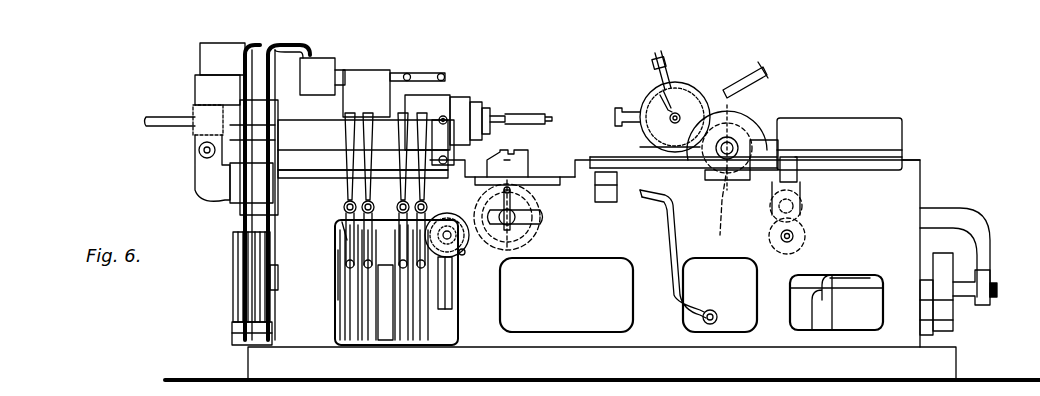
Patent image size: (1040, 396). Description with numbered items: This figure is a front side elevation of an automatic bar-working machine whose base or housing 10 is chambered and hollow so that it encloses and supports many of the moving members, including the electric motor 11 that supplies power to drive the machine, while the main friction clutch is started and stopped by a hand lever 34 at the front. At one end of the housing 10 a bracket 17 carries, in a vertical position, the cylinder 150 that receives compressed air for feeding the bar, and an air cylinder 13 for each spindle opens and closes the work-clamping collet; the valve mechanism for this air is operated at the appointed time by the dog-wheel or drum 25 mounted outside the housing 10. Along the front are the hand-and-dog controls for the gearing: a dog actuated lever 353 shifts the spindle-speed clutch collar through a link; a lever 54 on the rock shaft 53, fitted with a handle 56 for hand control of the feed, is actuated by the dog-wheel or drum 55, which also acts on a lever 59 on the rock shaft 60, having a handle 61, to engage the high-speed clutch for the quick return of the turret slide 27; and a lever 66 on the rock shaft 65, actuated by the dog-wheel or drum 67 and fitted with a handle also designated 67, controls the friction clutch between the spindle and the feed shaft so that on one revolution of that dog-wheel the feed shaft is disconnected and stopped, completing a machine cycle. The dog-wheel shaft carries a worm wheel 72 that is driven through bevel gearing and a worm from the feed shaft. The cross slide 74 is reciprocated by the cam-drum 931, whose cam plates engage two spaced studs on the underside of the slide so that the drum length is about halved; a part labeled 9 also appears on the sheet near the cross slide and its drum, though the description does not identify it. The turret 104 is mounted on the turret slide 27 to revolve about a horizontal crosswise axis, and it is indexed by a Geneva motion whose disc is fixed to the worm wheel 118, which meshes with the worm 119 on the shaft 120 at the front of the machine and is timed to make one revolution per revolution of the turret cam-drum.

The work support 9 is at (512, 152).
The base or housing 10 is at (926, 187).
The electric motor 11 is at (655, 52).
The air cylinder 13 is at (330, 64).
The bracket 17 is at (205, 92).
The dog-wheel or drum 25 is at (236, 291).
The turret slide 27 is at (839, 144).
The hand lever 34 is at (675, 277).
The rock shaft 53 is at (345, 222).
The lever 54 is at (340, 247).
The dog-wheel or drum 55 is at (350, 318).
The handle 56 is at (363, 149).
The lever 59 is at (350, 181).
The rock shaft 60 is at (344, 206).
The handle 61 is at (345, 127).
The rock shaft 65 is at (425, 205).
The lever 66 is at (440, 216).
The dog-wheel or drum 67 is at (420, 118).
The worm wheel 72 is at (452, 310).
The cross slide 74 is at (532, 152).
The turret 104 is at (646, 100).
The worm wheel 118 is at (745, 125).
The worm 119 is at (720, 178).
The shaft 120 is at (640, 190).
The cylinder 150 is at (210, 58).
The dog actuated lever 353 is at (400, 220).
The cam-drum 931 is at (530, 232).